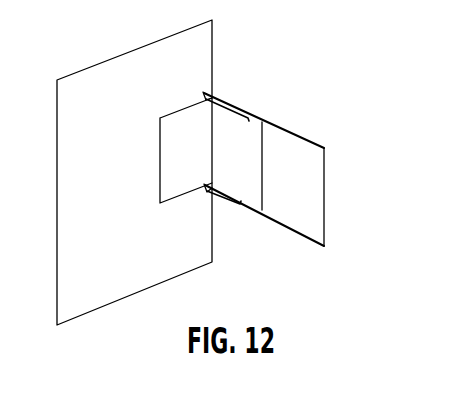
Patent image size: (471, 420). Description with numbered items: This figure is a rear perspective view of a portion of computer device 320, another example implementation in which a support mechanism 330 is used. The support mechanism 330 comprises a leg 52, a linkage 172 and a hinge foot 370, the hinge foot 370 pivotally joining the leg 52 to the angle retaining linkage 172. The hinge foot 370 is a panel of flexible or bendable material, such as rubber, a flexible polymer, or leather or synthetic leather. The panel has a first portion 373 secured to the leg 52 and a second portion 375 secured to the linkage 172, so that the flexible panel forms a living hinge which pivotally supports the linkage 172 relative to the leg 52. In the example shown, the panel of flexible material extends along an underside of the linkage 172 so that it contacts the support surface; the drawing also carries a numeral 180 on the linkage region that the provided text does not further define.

The leg 52 is at (147, 293).
The first portion 373 is at (187, 193).
The second portion 375 is at (249, 116).
The hinge foot 370 is at (233, 207).
The bracket member 180 is at (325, 213).
The linkage 172 is at (303, 237).
The support mechanism 330 is at (295, 172).
The computer device 320 is at (400, 74).